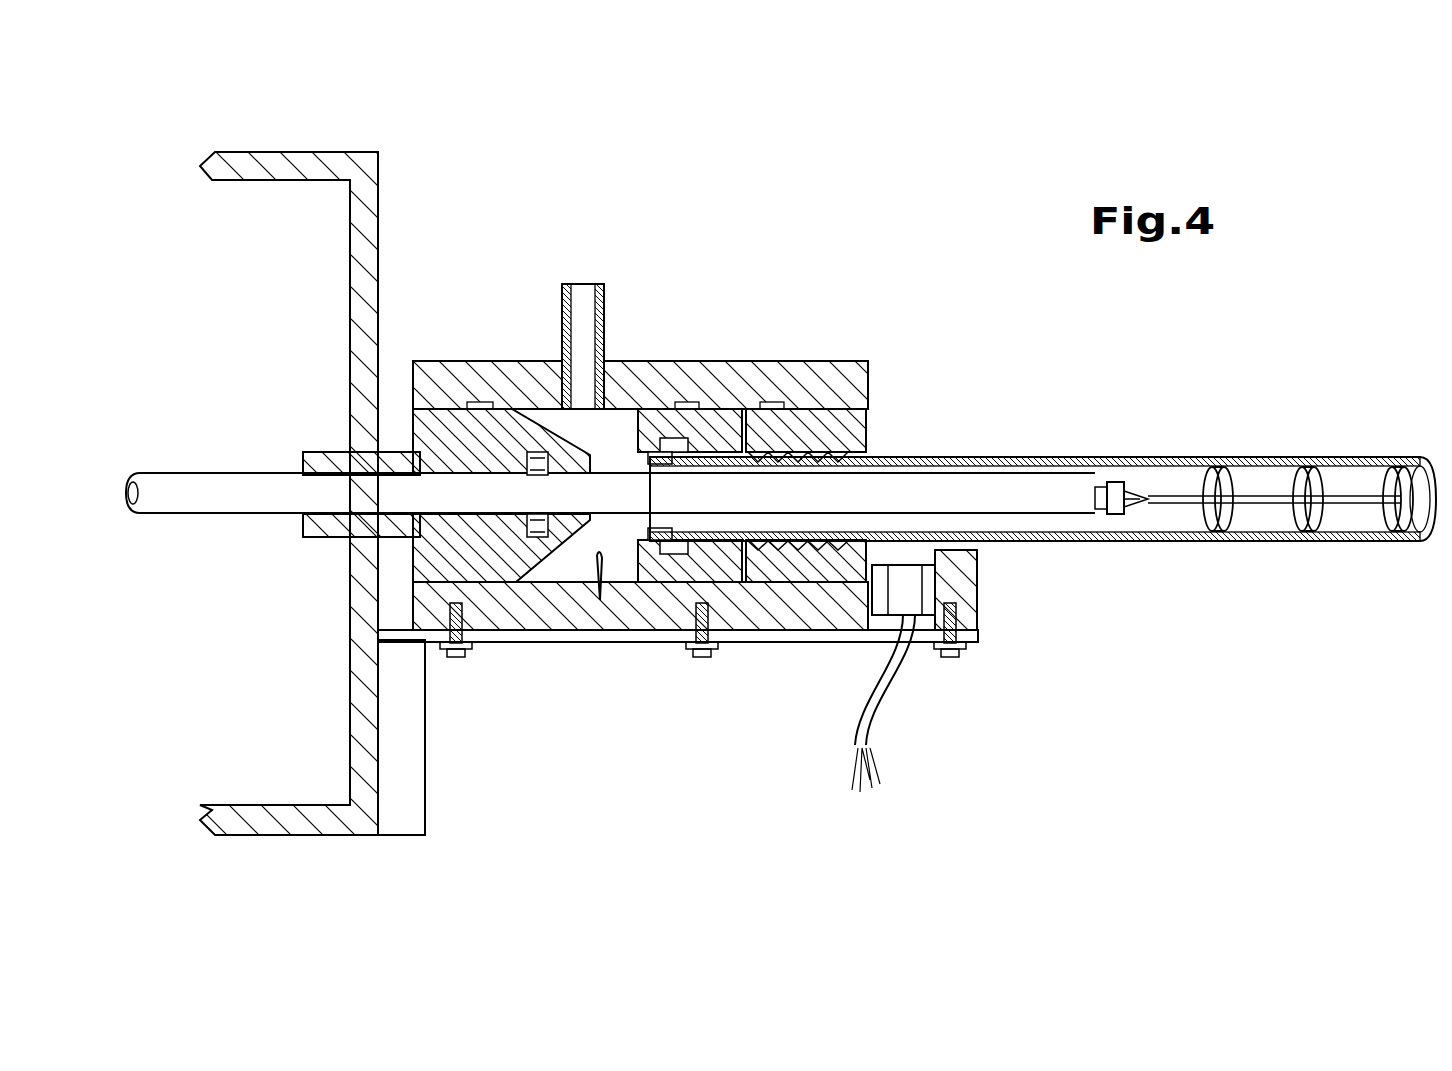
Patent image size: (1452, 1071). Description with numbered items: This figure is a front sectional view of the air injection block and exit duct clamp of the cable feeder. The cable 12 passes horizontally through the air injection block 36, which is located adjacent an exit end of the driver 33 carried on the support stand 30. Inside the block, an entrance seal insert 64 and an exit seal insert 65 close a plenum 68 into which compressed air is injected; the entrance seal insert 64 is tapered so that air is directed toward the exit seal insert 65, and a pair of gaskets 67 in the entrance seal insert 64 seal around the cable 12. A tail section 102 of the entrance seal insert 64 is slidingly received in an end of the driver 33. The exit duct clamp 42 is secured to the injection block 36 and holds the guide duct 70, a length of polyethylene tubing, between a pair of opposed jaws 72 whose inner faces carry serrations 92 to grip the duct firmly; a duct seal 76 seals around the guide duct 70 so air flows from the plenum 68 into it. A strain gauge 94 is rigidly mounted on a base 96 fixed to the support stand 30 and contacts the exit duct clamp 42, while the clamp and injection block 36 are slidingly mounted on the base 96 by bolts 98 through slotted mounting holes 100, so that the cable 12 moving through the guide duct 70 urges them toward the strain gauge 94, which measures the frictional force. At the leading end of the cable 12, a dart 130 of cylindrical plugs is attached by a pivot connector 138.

The cable 12 is at (222, 473).
The support stand 30 is at (412, 835).
The driver 33 is at (378, 190).
The air injection block 36 is at (514, 361).
The exit duct clamp 42 is at (815, 361).
The entrance seal insert 64 is at (486, 440).
The exit seal insert 65 is at (712, 420).
The gaskets 67 is at (536, 540).
The plenum 68 is at (600, 603).
The guide duct 70 is at (1108, 458).
The jaws 72 is at (864, 426).
The duct seal 76 is at (665, 560).
The serrations 92 is at (870, 457).
The strain gauge 94 is at (976, 585).
The base 96 is at (552, 640).
The bolts 98 is at (458, 657).
The slotted mounting holes 100 is at (440, 632).
The tail section 102 is at (330, 455).
The dart 130 is at (1308, 485).
The pivot connector 138 is at (1128, 520).